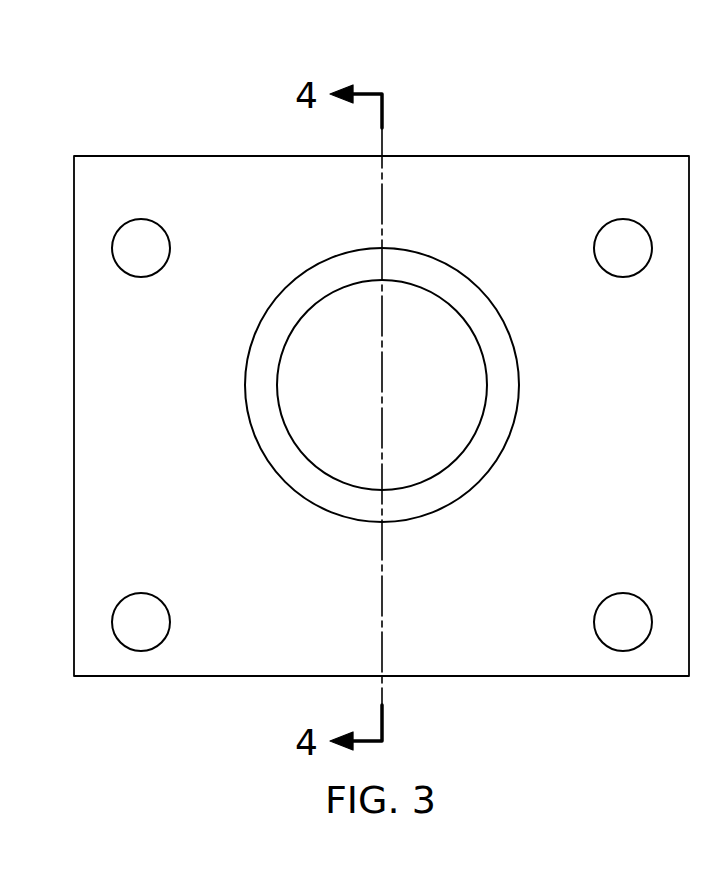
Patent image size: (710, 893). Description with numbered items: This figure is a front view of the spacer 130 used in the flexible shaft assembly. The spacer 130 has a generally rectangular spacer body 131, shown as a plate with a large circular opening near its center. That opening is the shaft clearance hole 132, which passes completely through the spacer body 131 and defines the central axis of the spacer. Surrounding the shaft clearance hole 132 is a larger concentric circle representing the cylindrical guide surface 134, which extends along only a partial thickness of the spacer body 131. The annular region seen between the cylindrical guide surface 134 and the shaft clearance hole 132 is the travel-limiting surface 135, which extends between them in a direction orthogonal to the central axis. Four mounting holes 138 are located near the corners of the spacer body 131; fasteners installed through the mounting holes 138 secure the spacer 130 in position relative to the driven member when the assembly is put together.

The spacer 130 is at (502, 113).
The spacer body 131 is at (73, 237).
The shaft clearance hole 132 is at (472, 438).
The cylindrical guide surface 134 is at (518, 383).
The travel-limiting surface 135 is at (497, 435).
The mounting holes 138 is at (145, 592).